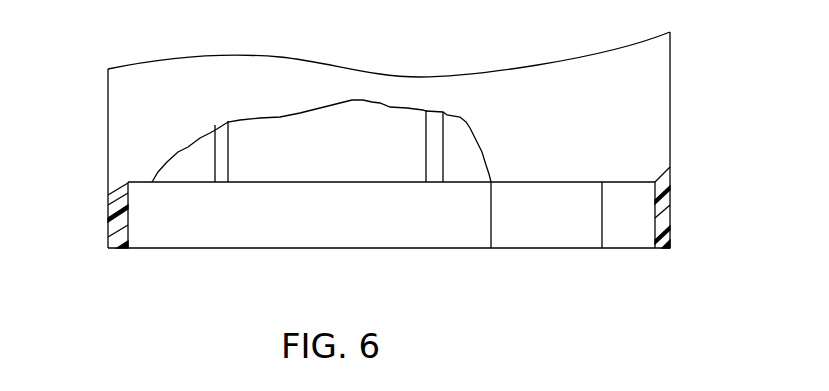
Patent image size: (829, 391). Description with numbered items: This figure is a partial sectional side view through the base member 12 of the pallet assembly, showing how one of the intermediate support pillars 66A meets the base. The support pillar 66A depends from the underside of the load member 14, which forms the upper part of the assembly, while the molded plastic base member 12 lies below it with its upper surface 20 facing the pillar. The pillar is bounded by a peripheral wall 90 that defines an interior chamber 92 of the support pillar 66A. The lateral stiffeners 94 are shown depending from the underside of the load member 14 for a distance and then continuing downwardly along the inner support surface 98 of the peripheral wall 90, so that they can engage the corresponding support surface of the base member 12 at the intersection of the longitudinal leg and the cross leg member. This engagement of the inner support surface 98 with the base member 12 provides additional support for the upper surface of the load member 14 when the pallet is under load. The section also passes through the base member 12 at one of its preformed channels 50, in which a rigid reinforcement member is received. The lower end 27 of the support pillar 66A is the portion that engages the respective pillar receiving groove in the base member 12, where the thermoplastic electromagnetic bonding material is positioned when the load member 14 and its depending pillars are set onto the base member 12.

The base member 12 is at (158, 237).
The load member 14 is at (670, 92).
The upper surface 20 is at (305, 182).
The lower end 27 is at (672, 208).
The channel 50 is at (566, 228).
The support pillar 66A is at (108, 135).
The peripheral wall 90 is at (563, 152).
The chamber 92 is at (374, 152).
The lateral stiffeners 94 is at (220, 133).
The inner support surface 98 is at (221, 183).